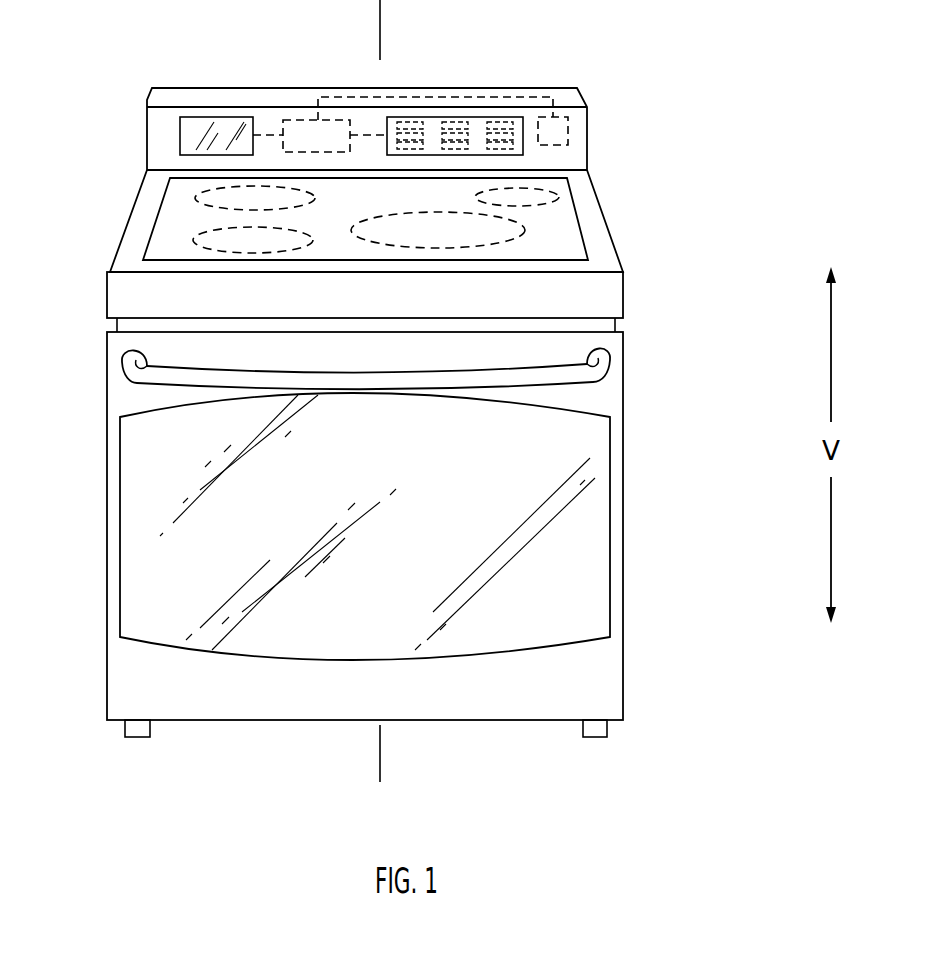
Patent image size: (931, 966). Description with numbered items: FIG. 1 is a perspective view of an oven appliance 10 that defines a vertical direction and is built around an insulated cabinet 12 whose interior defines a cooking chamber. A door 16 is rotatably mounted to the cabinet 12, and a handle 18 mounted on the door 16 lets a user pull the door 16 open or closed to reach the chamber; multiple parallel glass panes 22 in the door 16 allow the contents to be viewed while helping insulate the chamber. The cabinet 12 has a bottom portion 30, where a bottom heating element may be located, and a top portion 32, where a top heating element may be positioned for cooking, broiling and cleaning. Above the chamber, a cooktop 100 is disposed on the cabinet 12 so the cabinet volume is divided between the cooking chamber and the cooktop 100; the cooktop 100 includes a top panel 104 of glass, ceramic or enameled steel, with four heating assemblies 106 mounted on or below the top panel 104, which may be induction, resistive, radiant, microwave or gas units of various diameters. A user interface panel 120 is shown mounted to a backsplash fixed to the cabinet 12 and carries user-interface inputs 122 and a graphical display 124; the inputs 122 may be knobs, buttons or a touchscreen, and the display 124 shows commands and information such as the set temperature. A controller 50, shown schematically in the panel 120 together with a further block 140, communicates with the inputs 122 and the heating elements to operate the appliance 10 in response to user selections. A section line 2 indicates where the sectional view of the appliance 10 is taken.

The oven appliance 10 is at (780, 109).
The cabinet 12 is at (117, 325).
The door 16 is at (381, 504).
The handle 18 is at (162, 373).
The glass panes 22 is at (595, 563).
The bottom portion 30 is at (642, 718).
The top portion 32 is at (652, 270).
The controller 50 is at (290, 119).
The cooktop 100 is at (358, 199).
The top panel 104 is at (162, 236).
The heating assemblies 106 is at (192, 233).
The user interface panel 120 is at (406, 85).
The user-interface inputs 122 is at (460, 118).
The graphical display 124 is at (216, 118).
The sensor 140 is at (573, 137).
The section line 2 is at (390, 16).